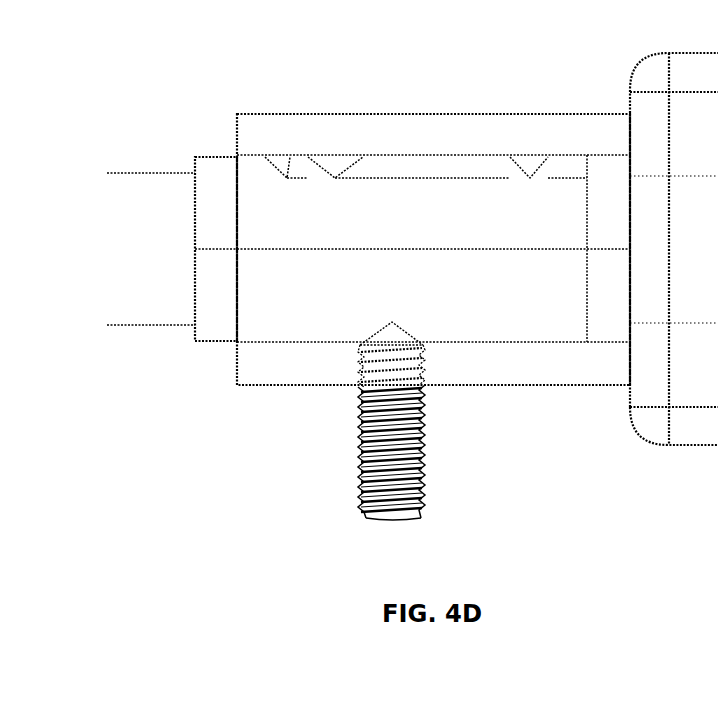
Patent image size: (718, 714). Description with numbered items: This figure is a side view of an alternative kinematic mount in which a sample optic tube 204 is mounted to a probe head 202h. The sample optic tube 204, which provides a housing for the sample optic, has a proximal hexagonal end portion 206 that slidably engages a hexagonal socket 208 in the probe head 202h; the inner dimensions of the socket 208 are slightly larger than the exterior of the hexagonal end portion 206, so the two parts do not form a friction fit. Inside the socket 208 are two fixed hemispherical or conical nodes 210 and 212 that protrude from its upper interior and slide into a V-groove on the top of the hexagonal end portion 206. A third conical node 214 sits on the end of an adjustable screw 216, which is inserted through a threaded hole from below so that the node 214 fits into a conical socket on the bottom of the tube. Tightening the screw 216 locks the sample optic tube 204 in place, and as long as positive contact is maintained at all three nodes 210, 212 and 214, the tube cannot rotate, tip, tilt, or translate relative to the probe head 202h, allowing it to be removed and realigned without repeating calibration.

The sample optic tube 204 is at (168, 173).
The hexagonal end portion 206 is at (228, 157).
The hexagonal socket 208 is at (448, 114).
The fixed hemispherical or conical node 210 is at (337, 157).
The fixed hemispherical or conical node 212 is at (535, 172).
The conical node 214 is at (393, 332).
The adjustable screw 216 is at (425, 438).
The probe head 202h is at (717, 55).